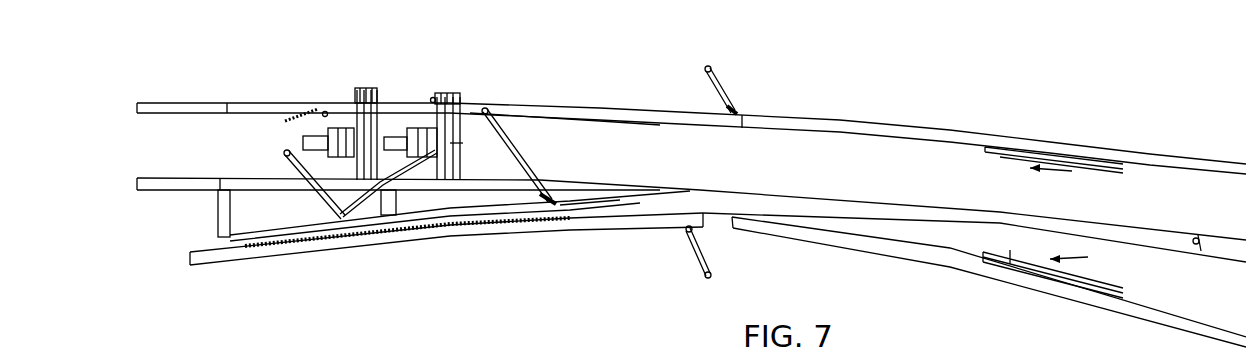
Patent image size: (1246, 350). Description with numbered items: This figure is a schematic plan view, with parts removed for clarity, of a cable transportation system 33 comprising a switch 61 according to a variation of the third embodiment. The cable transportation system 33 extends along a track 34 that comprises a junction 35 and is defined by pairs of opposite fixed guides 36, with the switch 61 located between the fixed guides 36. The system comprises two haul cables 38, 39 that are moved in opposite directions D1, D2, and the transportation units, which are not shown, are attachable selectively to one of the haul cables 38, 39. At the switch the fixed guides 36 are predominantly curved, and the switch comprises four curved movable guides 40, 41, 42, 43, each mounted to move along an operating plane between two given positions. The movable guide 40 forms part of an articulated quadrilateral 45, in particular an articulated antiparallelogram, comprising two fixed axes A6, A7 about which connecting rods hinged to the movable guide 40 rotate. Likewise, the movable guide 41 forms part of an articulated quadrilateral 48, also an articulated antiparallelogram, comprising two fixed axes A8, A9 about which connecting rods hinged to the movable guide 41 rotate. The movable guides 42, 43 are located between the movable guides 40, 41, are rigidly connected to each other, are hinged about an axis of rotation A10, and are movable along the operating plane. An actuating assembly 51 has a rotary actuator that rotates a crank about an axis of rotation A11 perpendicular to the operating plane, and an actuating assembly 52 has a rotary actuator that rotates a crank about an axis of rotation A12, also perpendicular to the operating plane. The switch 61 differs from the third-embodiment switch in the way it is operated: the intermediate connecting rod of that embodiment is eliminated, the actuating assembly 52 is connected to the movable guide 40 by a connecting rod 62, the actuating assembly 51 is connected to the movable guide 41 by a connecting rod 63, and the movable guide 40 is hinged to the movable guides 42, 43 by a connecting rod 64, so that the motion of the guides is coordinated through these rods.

The cable transportation system 33 is at (882, 80).
The track 34 is at (1142, 106).
The junction 35 is at (304, 280).
The fixed guides 36 is at (194, 103).
The haul cable 38 is at (1005, 156).
The haul cable 39 is at (1010, 264).
The movable guide 40 is at (645, 112).
The movable guide 41 is at (440, 233).
The movable guide 42 is at (585, 200).
The movable guide 43 is at (585, 205).
The articulated quadrilateral 45 is at (485, 68).
The articulated quadrilateral 48 is at (529, 250).
The actuating assembly 51 is at (458, 143).
The actuating assembly 52 is at (385, 118).
The switch 61 is at (550, 70).
The connecting rod 62 is at (340, 130).
The connecting rod 63 is at (365, 194).
The connecting rod 64 is at (528, 160).
The fixed axis A6 is at (288, 118).
The fixed axis A7 is at (722, 66).
The fixed axis A8 is at (283, 155).
The fixed axis A9 is at (709, 279).
The axis of rotation A10 is at (1193, 248).
The axis of rotation A11 is at (434, 98).
The axis of rotation A12 is at (322, 112).
The direction D1 is at (1050, 172).
The direction D2 is at (1083, 255).